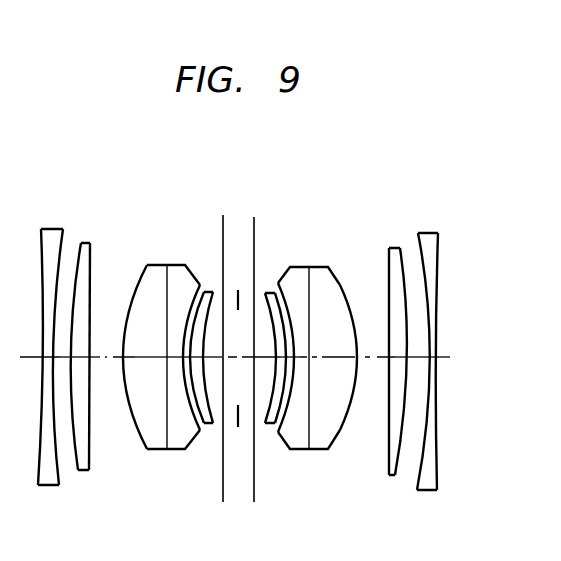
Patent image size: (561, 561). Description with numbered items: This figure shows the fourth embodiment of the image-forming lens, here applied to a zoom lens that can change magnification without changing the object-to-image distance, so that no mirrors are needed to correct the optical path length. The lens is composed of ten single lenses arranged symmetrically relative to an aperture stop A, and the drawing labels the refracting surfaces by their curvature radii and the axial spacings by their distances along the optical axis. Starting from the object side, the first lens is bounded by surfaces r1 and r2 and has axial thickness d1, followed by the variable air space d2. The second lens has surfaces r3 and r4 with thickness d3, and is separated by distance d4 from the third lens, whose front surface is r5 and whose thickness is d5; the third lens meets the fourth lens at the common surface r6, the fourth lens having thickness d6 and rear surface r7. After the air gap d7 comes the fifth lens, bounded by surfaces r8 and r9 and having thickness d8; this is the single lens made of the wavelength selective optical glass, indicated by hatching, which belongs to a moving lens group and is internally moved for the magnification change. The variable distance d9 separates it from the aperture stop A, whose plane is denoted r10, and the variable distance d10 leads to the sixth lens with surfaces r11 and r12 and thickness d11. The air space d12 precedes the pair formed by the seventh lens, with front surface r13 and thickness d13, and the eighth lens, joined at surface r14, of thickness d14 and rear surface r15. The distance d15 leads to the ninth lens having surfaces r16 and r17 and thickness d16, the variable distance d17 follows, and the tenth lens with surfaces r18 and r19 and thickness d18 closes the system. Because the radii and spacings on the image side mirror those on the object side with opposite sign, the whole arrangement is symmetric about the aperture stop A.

The curvature radius r1 is at (41, 247).
The curvature radius r2 is at (65, 247).
The curvature radius r3 is at (78, 257).
The curvature radius r4 is at (92, 257).
The curvature radius r5 is at (142, 265).
The curvature radius r6 is at (165, 265).
The curvature radius r7 is at (202, 286).
The curvature radius r8 is at (207, 290).
The curvature radius r9 is at (218, 290).
The curvature radius r10 is at (248, 291).
The curvature radius r11 is at (261, 291).
The curvature radius r12 is at (281, 283).
The curvature radius r13 is at (302, 286).
The curvature radius r14 is at (312, 287).
The curvature radius r15 is at (341, 286).
The curvature radius r16 is at (388, 271).
The curvature radius r17 is at (407, 250).
The curvature radius r18 is at (415, 247).
The curvature radius r19 is at (440, 258).
The distance d1 is at (47, 357).
The distance d2 is at (67, 357).
The distance d3 is at (84, 357).
The distance d4 is at (107, 357).
The distance d5 is at (152, 357).
The distance d6 is at (176, 357).
The distance d7 is at (188, 357).
The distance d8 is at (198, 357).
The distance d9 is at (227, 357).
The distance d10 is at (280, 357).
The distance d11 is at (290, 357).
The distance d12 is at (301, 357).
The distance d13 is at (330, 357).
The distance d14 is at (372, 357).
The distance d15 is at (398, 357).
The distance d16 is at (418, 357).
The distance d17 is at (433, 357).
The distance d18 is at (445, 357).
The aperture stop A is at (238, 292).